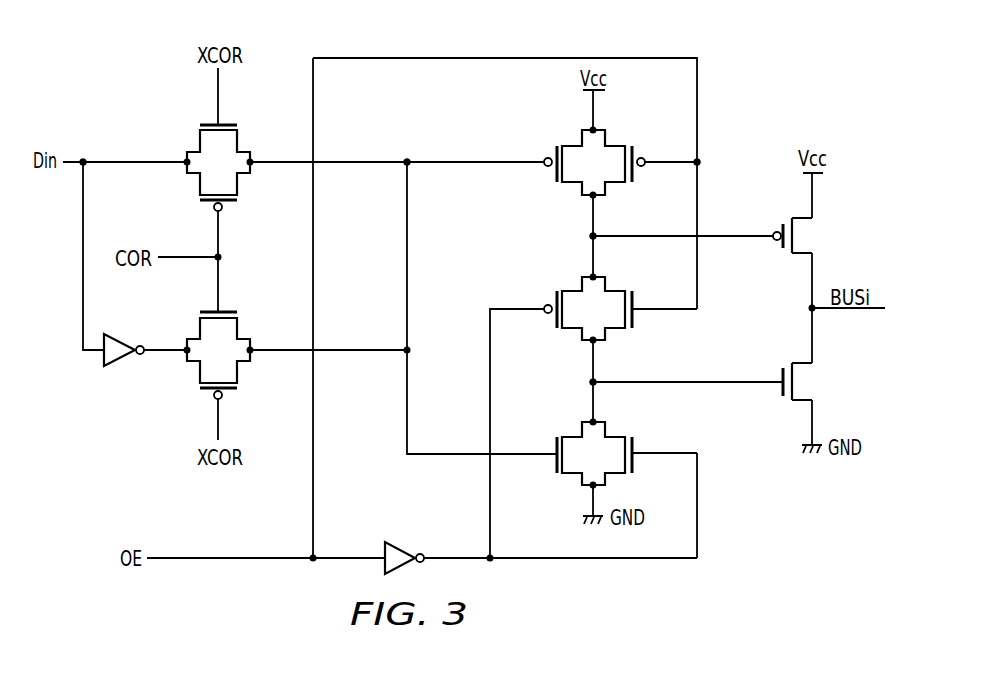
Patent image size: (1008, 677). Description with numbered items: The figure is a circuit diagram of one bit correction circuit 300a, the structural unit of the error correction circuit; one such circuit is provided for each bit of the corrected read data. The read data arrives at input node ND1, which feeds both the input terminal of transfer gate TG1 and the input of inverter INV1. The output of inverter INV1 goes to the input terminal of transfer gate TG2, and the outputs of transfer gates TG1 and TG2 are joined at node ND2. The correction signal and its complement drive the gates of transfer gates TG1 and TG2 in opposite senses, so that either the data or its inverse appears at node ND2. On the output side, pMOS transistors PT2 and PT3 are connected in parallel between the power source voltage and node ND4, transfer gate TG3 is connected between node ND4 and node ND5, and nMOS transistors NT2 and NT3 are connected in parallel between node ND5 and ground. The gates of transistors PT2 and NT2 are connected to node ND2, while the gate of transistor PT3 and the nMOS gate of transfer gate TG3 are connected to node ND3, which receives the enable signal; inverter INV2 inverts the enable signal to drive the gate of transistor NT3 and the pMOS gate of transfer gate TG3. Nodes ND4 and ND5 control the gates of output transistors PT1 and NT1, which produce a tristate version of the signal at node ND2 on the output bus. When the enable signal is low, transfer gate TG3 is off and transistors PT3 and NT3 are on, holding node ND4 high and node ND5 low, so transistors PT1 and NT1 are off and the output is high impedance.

The bit correction circuit 300a is at (278, 54).
The transfer gate TG1 is at (208, 125).
The transfer gate TG2 is at (208, 390).
The transfer gate TG3 is at (552, 293).
The inverter INV1 is at (123, 364).
The inverter INV2 is at (406, 542).
The input node ND1 is at (79, 157).
The node ND2 is at (403, 158).
The node ND3 is at (703, 157).
The node ND4 is at (587, 232).
The node ND5 is at (587, 378).
The pMOS transistor PT1 is at (780, 228).
The pMOS transistor PT2 is at (552, 148).
The pMOS transistor PT3 is at (644, 150).
The nMOS transistor NT1 is at (781, 395).
The nMOS transistor NT2 is at (552, 464).
The nMOS transistor NT3 is at (641, 447).